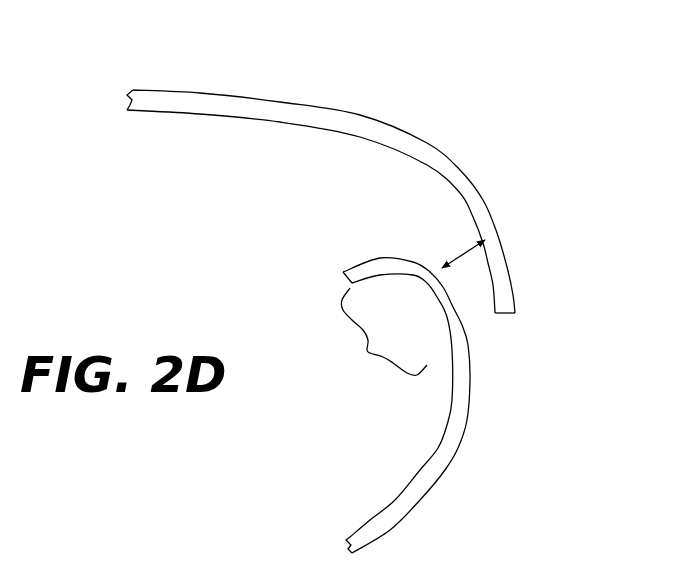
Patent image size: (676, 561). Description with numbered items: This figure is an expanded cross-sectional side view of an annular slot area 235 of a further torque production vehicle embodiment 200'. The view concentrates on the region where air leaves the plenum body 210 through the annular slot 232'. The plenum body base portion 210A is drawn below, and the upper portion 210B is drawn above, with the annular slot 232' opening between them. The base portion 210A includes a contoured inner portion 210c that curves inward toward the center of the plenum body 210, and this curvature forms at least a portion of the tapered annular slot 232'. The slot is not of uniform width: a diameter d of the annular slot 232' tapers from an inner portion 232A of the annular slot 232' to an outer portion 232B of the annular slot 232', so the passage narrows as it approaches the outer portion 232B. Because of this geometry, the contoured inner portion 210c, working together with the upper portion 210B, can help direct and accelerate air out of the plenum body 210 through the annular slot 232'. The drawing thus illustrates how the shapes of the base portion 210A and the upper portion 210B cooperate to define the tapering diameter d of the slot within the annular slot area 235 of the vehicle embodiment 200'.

The vehicle embodiment 200' is at (524, 83).
The plenum body 210 is at (388, 292).
The plenum body base portion 210A is at (407, 492).
The upper portion 210B is at (176, 92).
The contoured inner portion 210c is at (377, 337).
The annular slot 232' is at (449, 296).
The inner portion of the annular slot 232A is at (417, 240).
The outer portion of the annular slot 232B is at (478, 312).
The annular slot area 235 is at (534, 309).
The diameter of the annular slot d is at (463, 250).